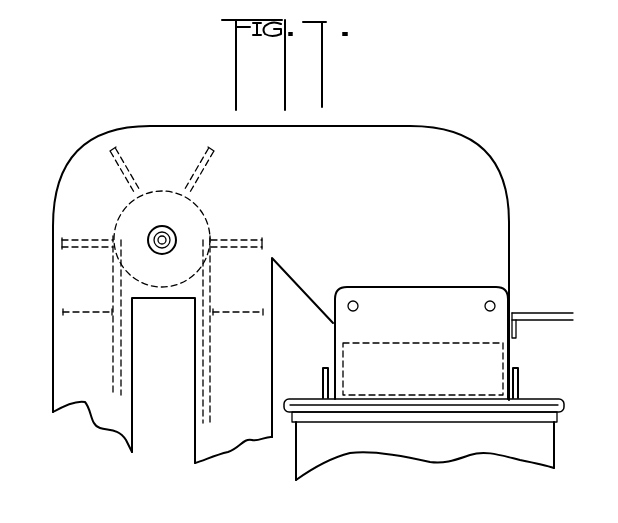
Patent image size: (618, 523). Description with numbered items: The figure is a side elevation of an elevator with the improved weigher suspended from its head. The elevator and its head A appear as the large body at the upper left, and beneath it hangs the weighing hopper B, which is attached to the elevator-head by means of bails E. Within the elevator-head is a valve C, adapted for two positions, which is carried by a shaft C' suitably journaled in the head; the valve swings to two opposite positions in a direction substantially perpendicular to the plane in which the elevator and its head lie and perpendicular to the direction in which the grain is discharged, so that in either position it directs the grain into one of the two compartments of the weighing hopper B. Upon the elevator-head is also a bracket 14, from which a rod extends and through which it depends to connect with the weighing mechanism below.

The bracket 14 is at (525, 313).
The elevator and its head A is at (281, 294).
The weighing hopper B is at (425, 451).
The valve C is at (421, 343).
The shaft C' is at (420, 370).
The bails E is at (542, 397).